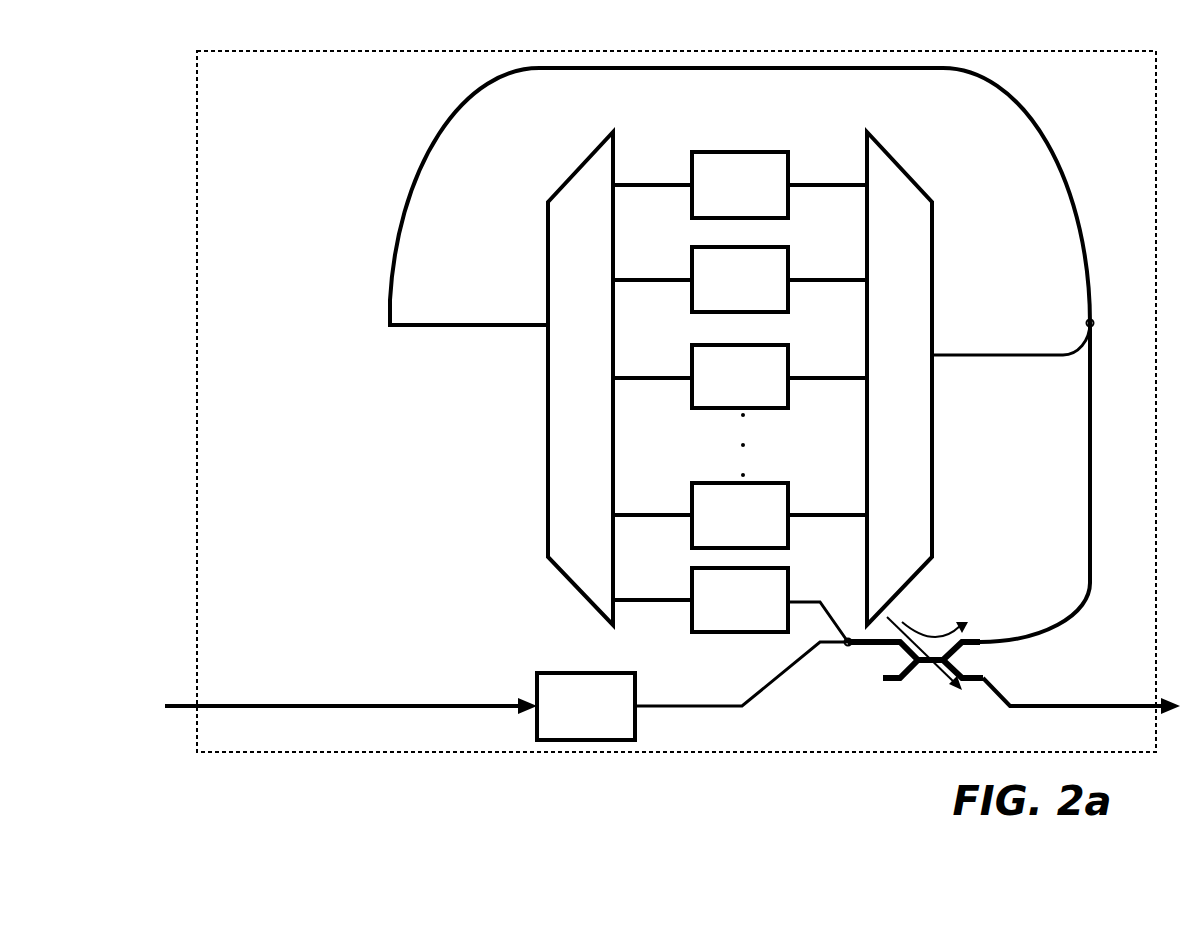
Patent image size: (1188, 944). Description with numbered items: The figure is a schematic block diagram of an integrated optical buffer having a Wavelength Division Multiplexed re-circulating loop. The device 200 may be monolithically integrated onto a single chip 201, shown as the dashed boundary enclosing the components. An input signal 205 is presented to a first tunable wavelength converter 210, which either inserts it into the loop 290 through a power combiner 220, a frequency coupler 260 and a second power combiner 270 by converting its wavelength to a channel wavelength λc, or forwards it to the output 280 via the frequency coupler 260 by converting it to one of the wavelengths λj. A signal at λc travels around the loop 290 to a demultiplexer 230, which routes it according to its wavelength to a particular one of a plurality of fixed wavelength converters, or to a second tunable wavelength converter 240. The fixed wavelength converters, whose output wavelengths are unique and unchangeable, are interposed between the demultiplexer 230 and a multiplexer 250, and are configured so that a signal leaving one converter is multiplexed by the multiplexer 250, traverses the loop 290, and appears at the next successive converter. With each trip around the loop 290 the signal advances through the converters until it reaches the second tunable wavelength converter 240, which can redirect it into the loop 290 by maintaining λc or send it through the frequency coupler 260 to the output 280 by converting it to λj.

The device 200 is at (1040, 14).
The single chip 201 is at (590, 755).
The input signal 205 is at (469, 708).
The first tunable wavelength converter 210 is at (593, 673).
The power combiner 220 is at (847, 648).
The demultiplexer 230 is at (585, 180).
The second tunable wavelength converter 240 is at (739, 634).
The multiplexer 250 is at (910, 170).
The frequency coupler 260 is at (886, 680).
The second power combiner 270 is at (1086, 321).
The output 280 is at (1083, 705).
The loop 290 is at (828, 68).